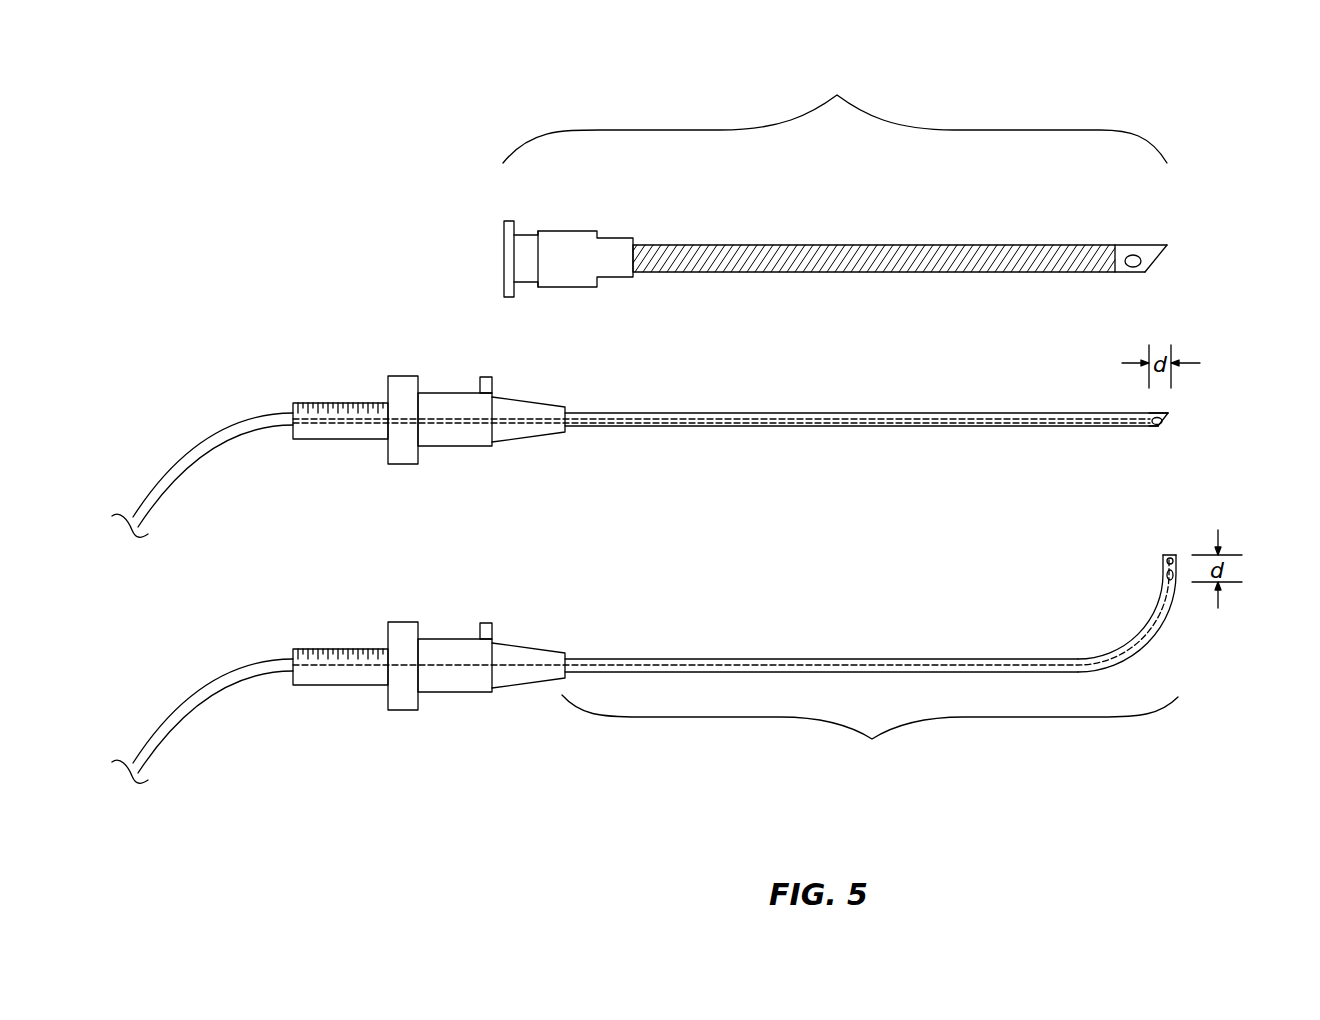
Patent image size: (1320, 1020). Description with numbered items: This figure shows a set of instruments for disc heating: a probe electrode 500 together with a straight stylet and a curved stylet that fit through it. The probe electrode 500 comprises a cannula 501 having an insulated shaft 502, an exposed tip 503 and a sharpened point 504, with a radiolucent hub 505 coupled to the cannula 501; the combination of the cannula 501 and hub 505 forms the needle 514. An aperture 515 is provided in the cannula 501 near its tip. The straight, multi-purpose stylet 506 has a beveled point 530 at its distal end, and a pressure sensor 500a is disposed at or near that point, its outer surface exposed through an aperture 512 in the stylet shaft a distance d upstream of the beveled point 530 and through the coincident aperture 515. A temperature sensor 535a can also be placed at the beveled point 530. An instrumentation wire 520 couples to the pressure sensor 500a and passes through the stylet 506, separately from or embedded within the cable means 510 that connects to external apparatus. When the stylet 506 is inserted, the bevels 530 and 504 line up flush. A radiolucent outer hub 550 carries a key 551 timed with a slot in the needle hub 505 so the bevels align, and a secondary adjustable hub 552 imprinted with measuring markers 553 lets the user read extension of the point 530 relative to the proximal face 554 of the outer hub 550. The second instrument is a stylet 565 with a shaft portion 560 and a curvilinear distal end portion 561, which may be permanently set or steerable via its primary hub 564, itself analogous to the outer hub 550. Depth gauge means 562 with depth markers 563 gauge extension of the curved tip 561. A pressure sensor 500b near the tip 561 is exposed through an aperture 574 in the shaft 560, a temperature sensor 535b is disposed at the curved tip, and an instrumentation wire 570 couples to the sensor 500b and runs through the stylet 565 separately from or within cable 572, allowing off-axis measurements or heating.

The probe electrode 500 is at (586, 84).
The needle 514 is at (835, 111).
The radiolucent hub 505 is at (568, 230).
The cannula 501 is at (727, 245).
The insulated shaft 502 is at (885, 245).
The exposed tip 503 is at (1125, 247).
The aperture 515 is at (1135, 255).
The sharpened point 504 is at (1160, 250).
The secondary adjustable hub 552 is at (302, 403).
The measuring markers 553 is at (355, 403).
The proximal face 554 is at (387, 455).
The outer hub 550 is at (452, 393).
The key 551 is at (485, 377).
The instrumentation cable 520 is at (685, 413).
The straight stylet 506 is at (865, 413).
The cable means 510 is at (198, 443).
The aperture 512 is at (1155, 413).
The pressure sensor 500a is at (1170, 410).
The beveled point 530 is at (1168, 421).
The temperature sensor 535a is at (1158, 428).
The depth gauge means 562 is at (302, 649).
The depth markers 563 is at (355, 649).
The primary hub 564 is at (440, 693).
The shaft portion 560 is at (685, 659).
The instrumentation cable 570 is at (865, 659).
The curvilinear distal end portion 561 is at (1168, 620).
The aperture 574 is at (1178, 575).
The pressure sensor 500b is at (1165, 575).
The temperature sensor 535b is at (1170, 556).
The cable 572 is at (180, 705).
The stylet 565 is at (870, 738).